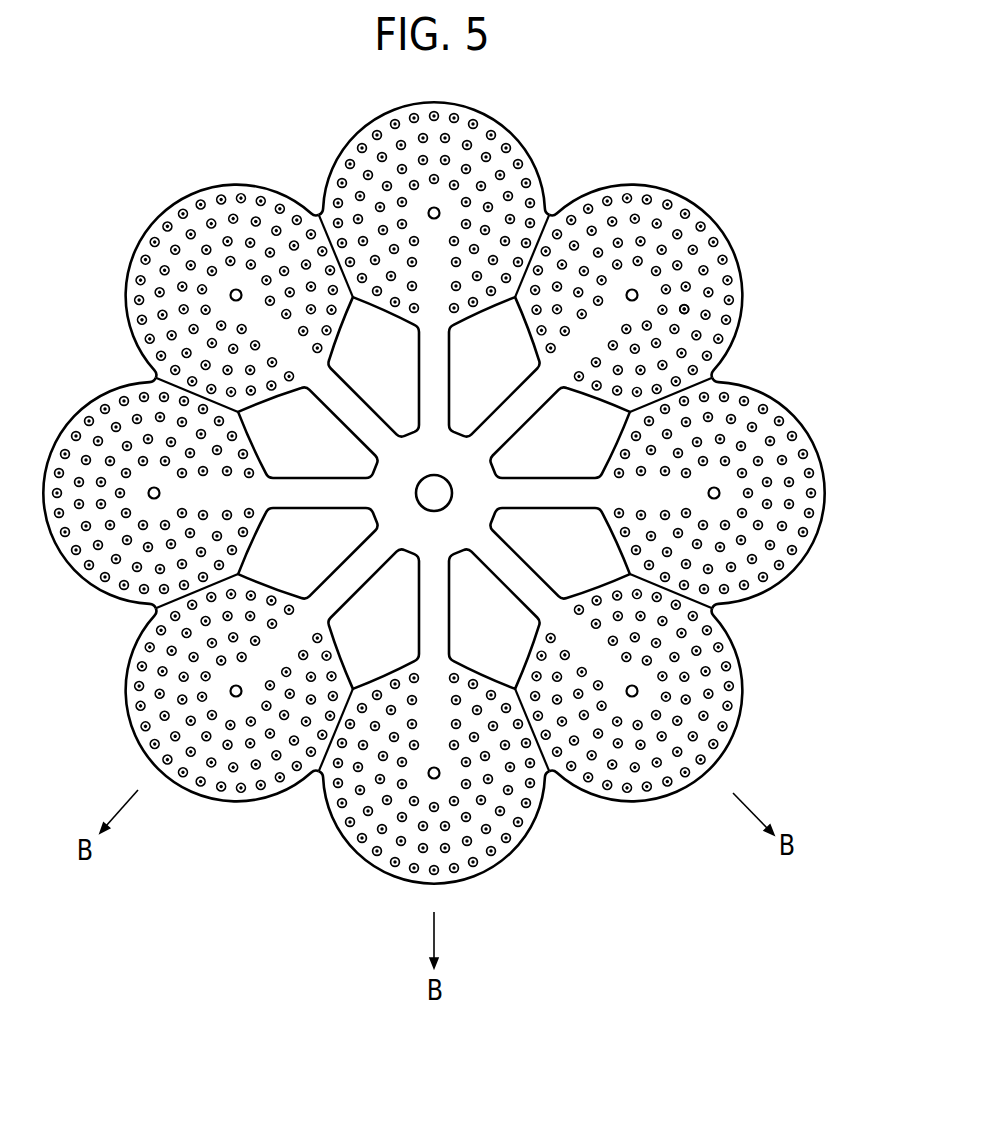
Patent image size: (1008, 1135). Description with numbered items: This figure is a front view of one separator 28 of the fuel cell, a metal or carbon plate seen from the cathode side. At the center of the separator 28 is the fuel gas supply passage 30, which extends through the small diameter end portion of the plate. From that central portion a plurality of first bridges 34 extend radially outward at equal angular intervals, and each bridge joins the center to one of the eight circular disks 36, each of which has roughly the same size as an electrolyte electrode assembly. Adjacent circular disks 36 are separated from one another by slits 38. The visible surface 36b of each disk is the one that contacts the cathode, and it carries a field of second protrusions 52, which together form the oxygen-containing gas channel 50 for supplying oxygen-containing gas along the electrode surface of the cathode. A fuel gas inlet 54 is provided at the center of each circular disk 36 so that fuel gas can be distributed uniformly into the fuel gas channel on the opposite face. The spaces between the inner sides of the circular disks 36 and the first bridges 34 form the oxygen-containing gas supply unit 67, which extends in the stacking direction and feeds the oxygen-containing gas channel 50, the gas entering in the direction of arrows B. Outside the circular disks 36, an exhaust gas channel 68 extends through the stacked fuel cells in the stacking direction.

The separator 28 is at (729, 140).
The fuel gas supply passage 30 is at (427, 481).
The first bridges 34 is at (448, 374).
The circular disks 36 is at (543, 150).
The surface 36b is at (812, 483).
The slits 38 is at (140, 417).
The oxygen-containing gas channel 50 is at (684, 314).
The second protrusions 52 is at (706, 308).
The fuel gas inlet 54 is at (632, 289).
The oxygen-containing gas supply unit 67 is at (372, 622).
The exhaust gas channel 68 is at (805, 567).